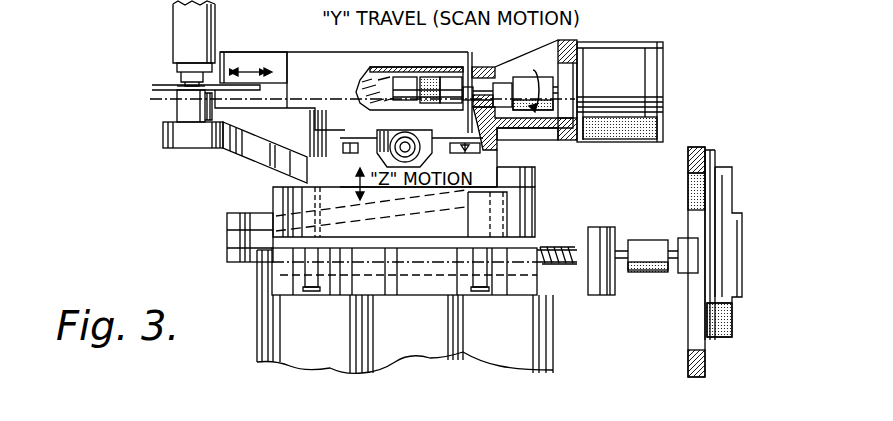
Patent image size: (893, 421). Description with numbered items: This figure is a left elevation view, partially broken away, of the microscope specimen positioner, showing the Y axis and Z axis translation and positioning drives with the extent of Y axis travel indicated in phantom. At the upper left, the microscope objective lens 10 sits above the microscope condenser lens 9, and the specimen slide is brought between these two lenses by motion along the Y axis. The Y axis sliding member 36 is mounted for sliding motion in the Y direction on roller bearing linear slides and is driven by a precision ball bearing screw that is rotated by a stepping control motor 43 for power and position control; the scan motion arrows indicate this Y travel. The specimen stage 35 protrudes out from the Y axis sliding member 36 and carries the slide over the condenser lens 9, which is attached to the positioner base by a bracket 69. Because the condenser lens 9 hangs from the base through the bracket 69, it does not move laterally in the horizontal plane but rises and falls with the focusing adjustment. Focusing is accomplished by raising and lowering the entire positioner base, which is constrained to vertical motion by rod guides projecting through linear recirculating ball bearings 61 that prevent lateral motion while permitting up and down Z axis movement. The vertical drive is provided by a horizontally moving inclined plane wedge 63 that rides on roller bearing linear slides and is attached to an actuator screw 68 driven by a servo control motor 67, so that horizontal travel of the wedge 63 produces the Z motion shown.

The microscope objective lens 10 is at (203, 41).
The microscope condenser lens 9 is at (198, 119).
The Y axis sliding member 36 is at (287, 50).
The specimen stage 35 is at (232, 93).
The bracket 69 is at (262, 152).
The inclined plane wedge 63 is at (227, 233).
The linear recirculating ball bearings 61 is at (280, 260).
The stepping control motor 43 is at (657, 57).
The actuator screw 68 is at (560, 242).
The servo control motor 67 is at (732, 317).